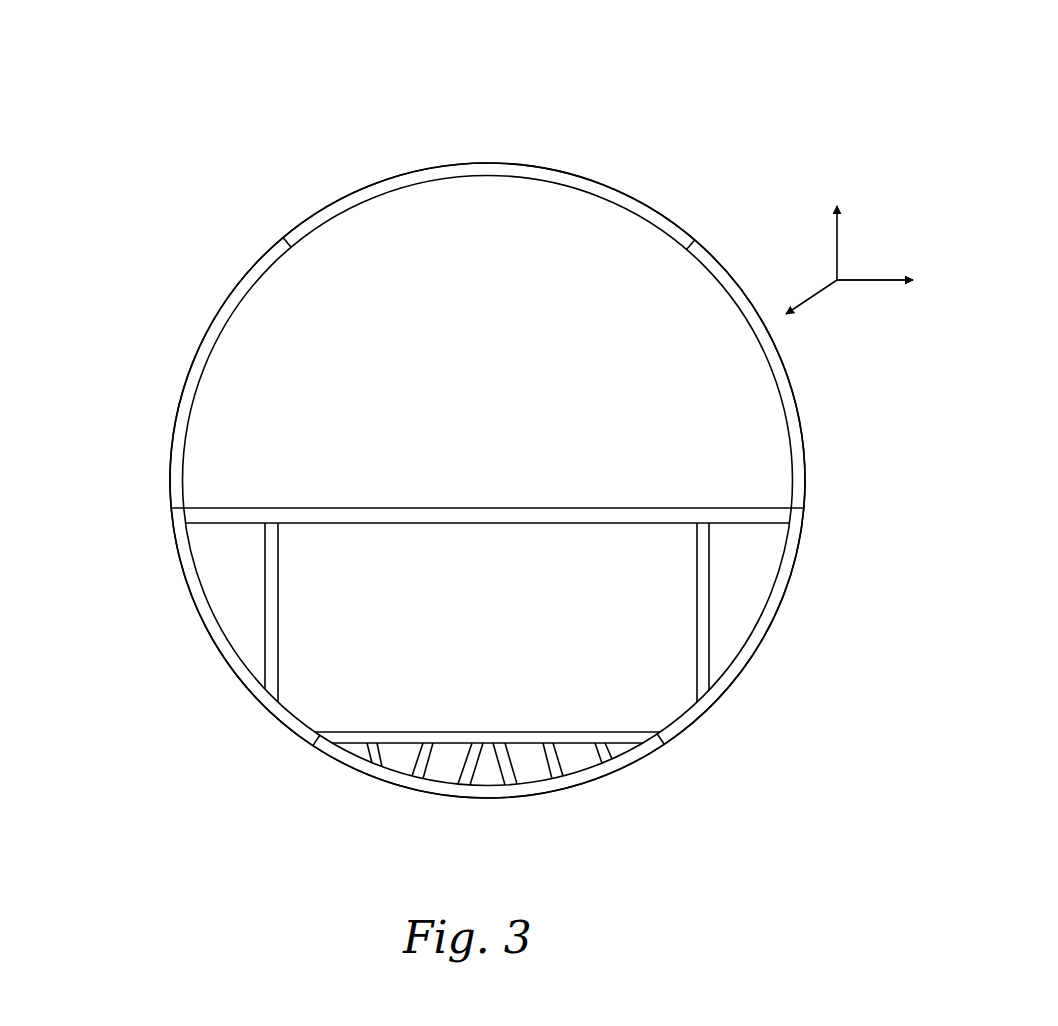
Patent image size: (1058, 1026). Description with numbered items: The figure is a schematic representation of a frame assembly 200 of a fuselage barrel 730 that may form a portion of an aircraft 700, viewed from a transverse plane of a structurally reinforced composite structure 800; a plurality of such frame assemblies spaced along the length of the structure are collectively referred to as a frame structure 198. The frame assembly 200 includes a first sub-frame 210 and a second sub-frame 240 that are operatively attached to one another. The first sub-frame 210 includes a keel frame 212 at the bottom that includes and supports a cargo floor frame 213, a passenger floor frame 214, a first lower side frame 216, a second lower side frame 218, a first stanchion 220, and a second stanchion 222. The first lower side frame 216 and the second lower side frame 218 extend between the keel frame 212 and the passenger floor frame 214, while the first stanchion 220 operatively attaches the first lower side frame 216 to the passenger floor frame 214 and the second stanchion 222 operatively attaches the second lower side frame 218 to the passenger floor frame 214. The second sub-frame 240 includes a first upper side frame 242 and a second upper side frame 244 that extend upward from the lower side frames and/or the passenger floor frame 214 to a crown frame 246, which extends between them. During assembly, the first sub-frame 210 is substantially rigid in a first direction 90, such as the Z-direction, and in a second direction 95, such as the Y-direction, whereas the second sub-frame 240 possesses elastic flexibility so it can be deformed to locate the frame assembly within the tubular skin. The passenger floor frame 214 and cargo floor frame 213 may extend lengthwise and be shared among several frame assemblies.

The aircraft 700 is at (128, 76).
The structurally reinforced composite structure 800 is at (128, 142).
The frame structure 198 is at (67, 225).
The fuselage barrel 730 is at (170, 257).
The frame assembly 200 is at (128, 315).
The second sub-frame 240 is at (125, 367).
The first upper side frame 242 is at (215, 338).
The second upper side frame 244 is at (745, 330).
The crown frame 246 is at (508, 176).
The first sub-frame 210 is at (143, 644).
The keel frame 212 is at (485, 797).
The cargo floor frame 213 is at (466, 731).
The passenger floor frame 214 is at (486, 523).
The first lower side frame 216 is at (176, 560).
The second lower side frame 218 is at (778, 598).
The first stanchion 220 is at (278, 593).
The second stanchion 222 is at (697, 560).
The first direction 90 is at (836, 235).
The second direction 95 is at (868, 284).